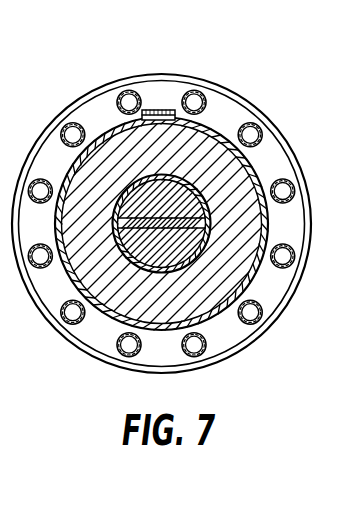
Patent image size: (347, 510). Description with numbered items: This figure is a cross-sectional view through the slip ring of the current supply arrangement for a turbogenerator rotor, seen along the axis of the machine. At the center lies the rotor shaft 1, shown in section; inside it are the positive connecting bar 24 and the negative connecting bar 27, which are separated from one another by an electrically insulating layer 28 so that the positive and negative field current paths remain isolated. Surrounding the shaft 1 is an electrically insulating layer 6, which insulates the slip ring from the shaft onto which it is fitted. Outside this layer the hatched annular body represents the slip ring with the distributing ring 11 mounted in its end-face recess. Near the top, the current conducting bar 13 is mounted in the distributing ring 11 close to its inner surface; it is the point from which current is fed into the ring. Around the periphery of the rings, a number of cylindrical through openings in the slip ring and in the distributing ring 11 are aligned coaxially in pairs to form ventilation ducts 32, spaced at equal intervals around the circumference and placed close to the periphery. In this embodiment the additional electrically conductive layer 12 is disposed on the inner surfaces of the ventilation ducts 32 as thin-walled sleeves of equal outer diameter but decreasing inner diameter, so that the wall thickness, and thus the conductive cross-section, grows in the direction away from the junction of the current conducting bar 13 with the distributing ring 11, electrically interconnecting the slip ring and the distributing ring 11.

The shaft 1 is at (240, 268).
The electrically insulating layer 6 is at (242, 158).
The distributing ring 11 is at (284, 157).
The additional electrically conductive layer 12 is at (294, 191).
The current conducting bar 13 is at (171, 121).
The positive connecting bar 24 is at (137, 190).
The negative connecting bar 27 is at (138, 256).
The electrically insulating layer 28 is at (209, 217).
The ventilation ducts 32 is at (202, 107).